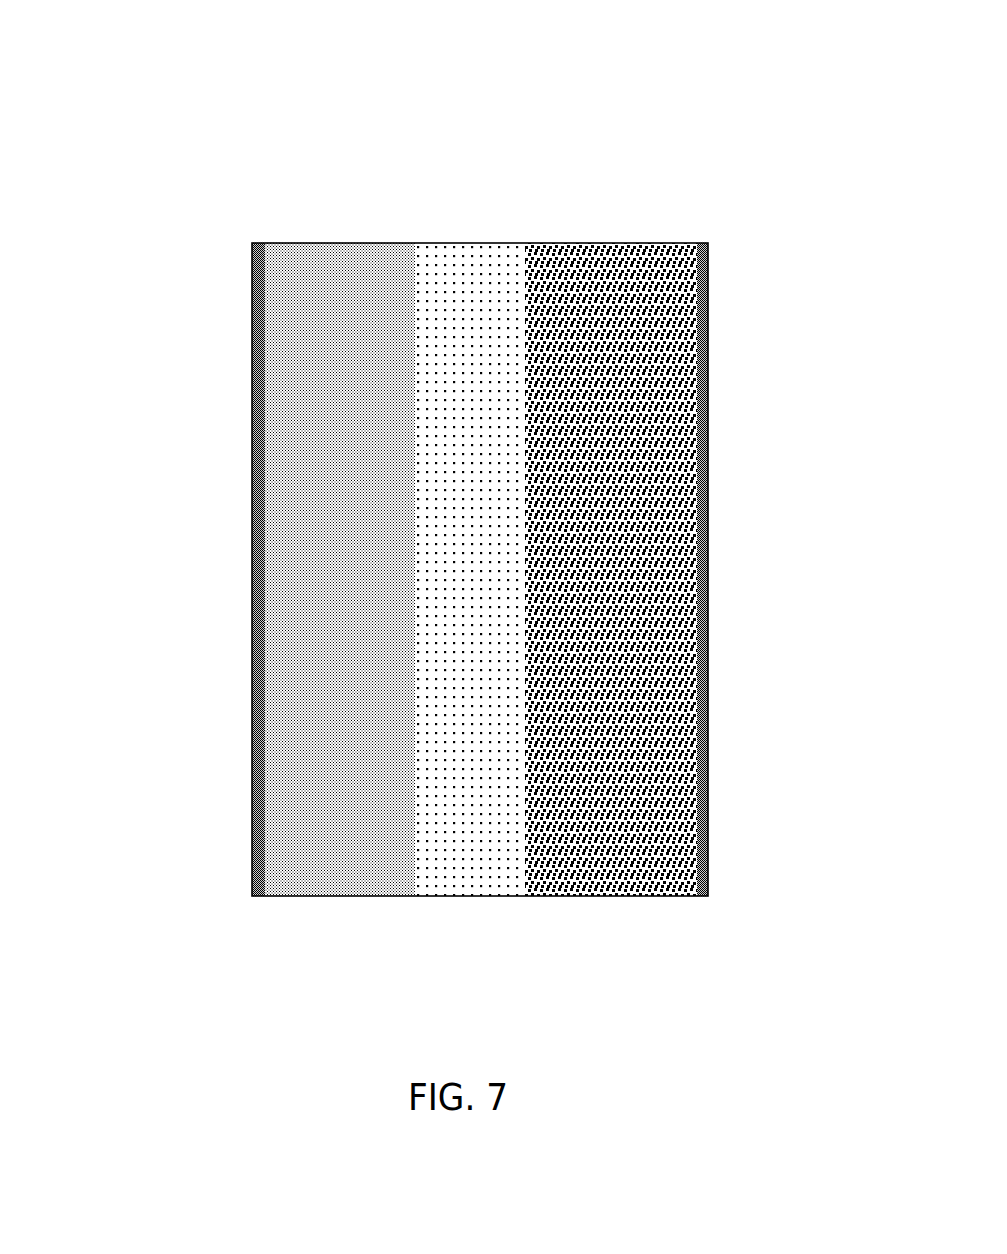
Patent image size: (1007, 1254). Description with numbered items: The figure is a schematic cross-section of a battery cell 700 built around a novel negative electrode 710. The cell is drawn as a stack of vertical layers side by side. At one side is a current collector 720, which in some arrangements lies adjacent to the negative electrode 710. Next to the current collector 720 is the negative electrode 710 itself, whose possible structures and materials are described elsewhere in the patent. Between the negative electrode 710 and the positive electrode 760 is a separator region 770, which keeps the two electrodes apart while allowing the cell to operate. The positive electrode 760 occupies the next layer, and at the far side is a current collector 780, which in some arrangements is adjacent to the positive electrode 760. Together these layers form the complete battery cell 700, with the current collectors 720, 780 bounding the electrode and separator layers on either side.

The battery cell 700 is at (449, 460).
The negative electrode 710 is at (317, 767).
The current collector 720 is at (255, 515).
The positive electrode 760 is at (597, 273).
The separator region 770 is at (478, 267).
The current collector 780 is at (707, 588).